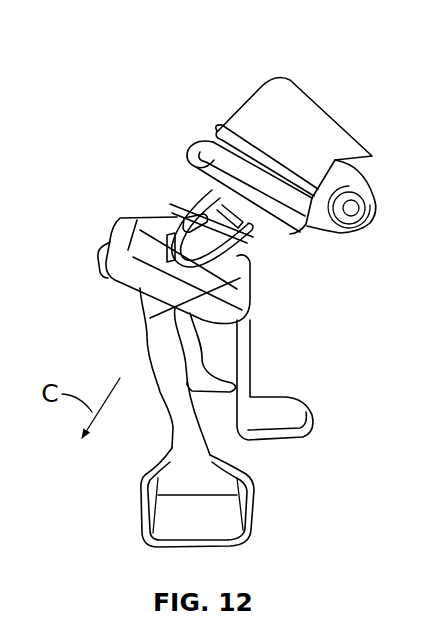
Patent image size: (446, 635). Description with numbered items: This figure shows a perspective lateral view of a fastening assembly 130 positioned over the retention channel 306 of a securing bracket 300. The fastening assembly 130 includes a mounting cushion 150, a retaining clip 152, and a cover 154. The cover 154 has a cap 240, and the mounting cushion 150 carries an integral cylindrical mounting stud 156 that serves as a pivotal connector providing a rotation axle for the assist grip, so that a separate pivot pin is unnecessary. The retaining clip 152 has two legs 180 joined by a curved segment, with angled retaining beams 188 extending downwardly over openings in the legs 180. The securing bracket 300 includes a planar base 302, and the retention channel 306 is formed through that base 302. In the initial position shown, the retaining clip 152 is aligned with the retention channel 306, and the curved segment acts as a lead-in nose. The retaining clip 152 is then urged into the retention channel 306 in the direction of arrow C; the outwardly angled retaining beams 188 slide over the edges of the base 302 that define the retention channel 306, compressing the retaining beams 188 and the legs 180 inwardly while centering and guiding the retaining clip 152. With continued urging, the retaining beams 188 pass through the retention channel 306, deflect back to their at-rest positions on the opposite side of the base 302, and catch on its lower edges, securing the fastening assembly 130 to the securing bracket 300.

The fastening assembly 130 is at (270, 66).
The cap 240 is at (291, 97).
The cover 154 is at (314, 119).
The mounting cushion 150 is at (309, 226).
The mounting stud 156 is at (362, 208).
The retaining beam 188 is at (191, 212).
The retaining clip 152 is at (177, 220).
The leg 180 is at (135, 218).
The securing bracket 300 is at (100, 277).
The base 302 is at (122, 241).
The retention channel 306 is at (150, 318).